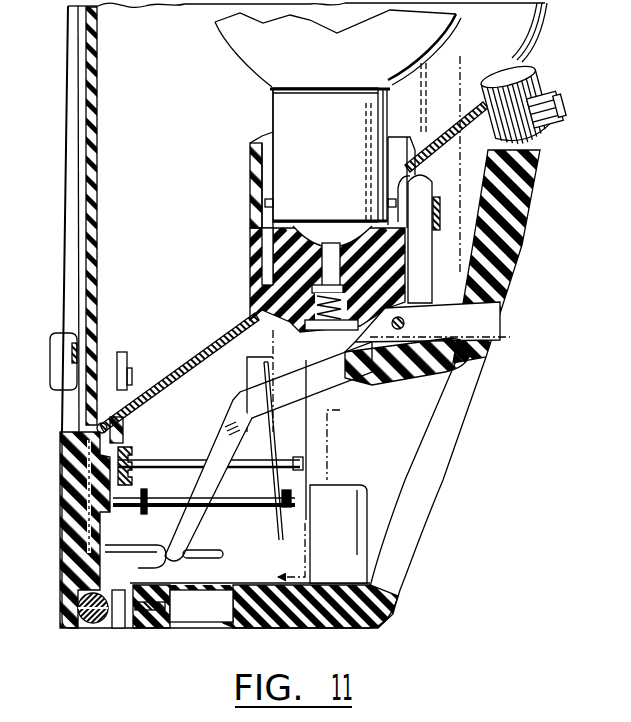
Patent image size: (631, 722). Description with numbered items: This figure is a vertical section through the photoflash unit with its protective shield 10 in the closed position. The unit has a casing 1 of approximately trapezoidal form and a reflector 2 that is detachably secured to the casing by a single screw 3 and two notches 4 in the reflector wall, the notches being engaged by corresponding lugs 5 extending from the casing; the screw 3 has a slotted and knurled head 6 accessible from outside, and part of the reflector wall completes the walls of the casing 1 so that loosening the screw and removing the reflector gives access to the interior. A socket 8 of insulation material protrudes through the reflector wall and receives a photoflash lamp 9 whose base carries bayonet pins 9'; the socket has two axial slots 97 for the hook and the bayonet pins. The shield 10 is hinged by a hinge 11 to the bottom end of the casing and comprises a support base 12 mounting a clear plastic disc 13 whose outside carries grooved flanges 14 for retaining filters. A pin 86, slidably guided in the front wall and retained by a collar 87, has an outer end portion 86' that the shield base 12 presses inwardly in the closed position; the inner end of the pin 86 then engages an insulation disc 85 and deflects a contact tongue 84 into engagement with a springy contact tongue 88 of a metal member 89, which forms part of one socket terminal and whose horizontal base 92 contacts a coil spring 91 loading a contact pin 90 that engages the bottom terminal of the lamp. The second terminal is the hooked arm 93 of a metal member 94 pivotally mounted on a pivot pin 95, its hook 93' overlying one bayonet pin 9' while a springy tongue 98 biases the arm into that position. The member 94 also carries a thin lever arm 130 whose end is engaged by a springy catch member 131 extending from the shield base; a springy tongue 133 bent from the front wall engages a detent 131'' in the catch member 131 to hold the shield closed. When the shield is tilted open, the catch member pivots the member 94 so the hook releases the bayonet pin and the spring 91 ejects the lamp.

The casing 1 is at (130, 432).
The reflector 2 is at (181, 360).
The screw 3 is at (522, 76).
The notches 4 is at (130, 377).
The lugs 5 is at (122, 353).
The head 6 is at (550, 106).
The socket 8 is at (245, 167).
The photoflash lamp 9 is at (331, 72).
The bayonet pins 9' is at (330, 185).
The protective shield 10 is at (57, 172).
The hinge 11 is at (103, 625).
The support base 12 is at (442, 52).
The disc 13 is at (97, 125).
The grooved flanges 14 is at (55, 356).
The contact tongue 84 is at (236, 460).
The insulation disc 85 is at (278, 520).
The pin 86 is at (204, 488).
The outer end portion 86' is at (143, 463).
The collar 87 is at (148, 490).
The springy contact tongue 88 is at (312, 510).
The metal member 89 is at (343, 413).
The contact pin 90 is at (260, 262).
The coil spring 91 is at (255, 300).
The horizontal base 92 is at (332, 385).
The hooked arm 93 is at (431, 239).
The hook 93' is at (430, 185).
The metal member 94 is at (234, 388).
The pivot pin 95 is at (394, 378).
The axial slots 97 is at (263, 173).
The springy tongue 98 is at (441, 206).
The lever arm 130 is at (224, 440).
The springy catch member 131 is at (212, 567).
The detent 131'' is at (134, 533).
The springy tongue 133 is at (156, 570).